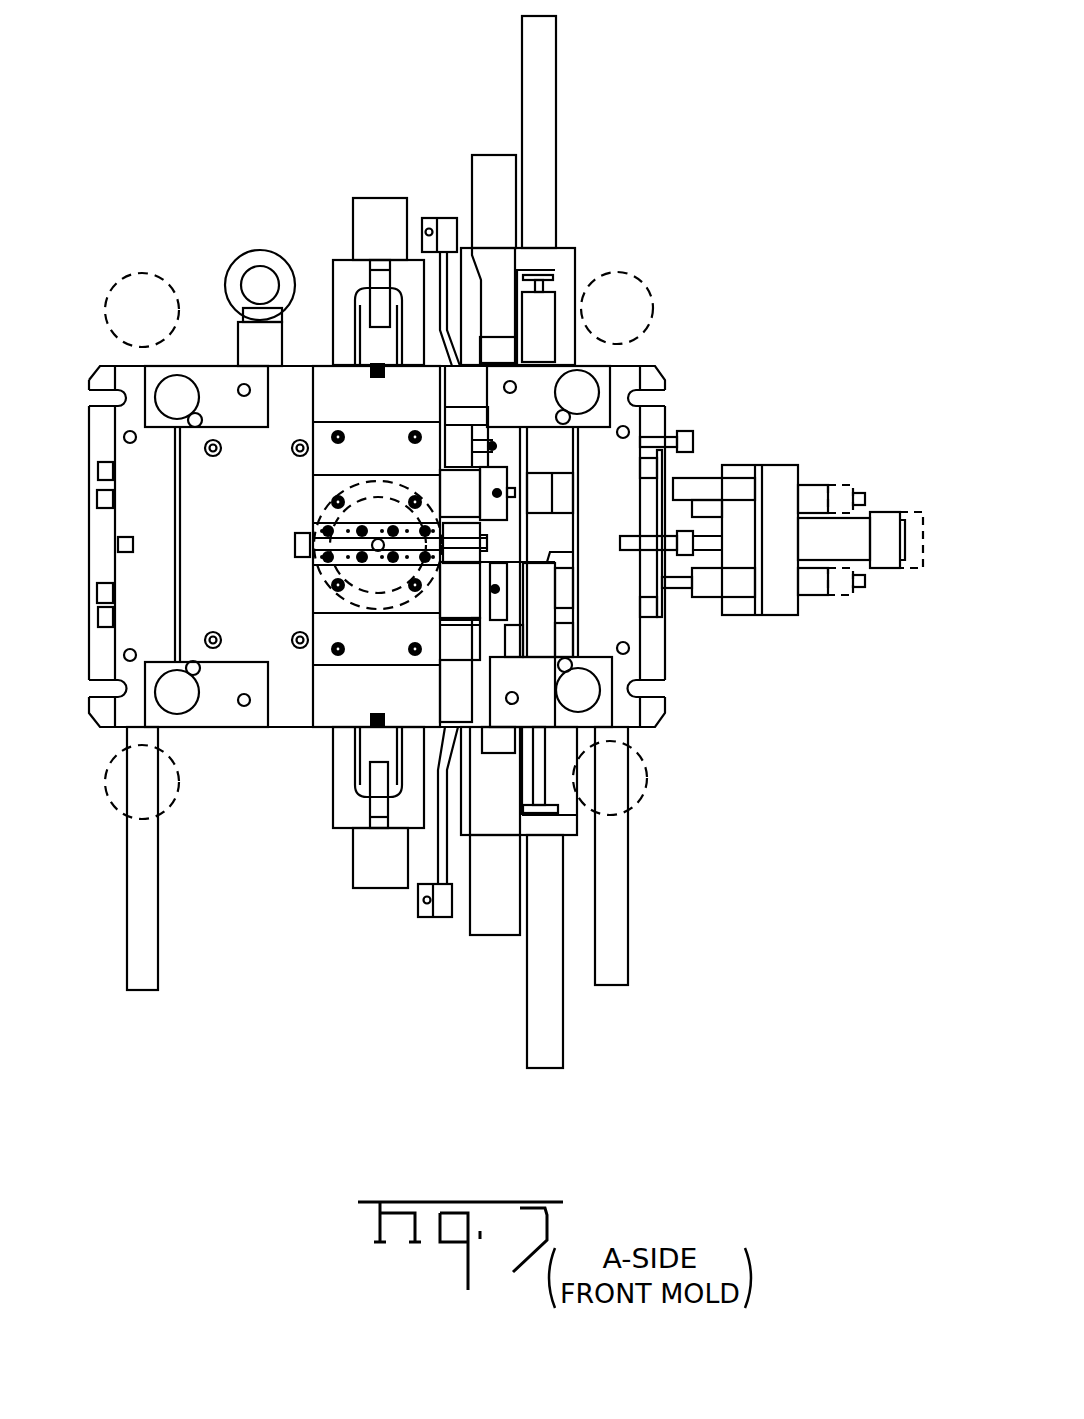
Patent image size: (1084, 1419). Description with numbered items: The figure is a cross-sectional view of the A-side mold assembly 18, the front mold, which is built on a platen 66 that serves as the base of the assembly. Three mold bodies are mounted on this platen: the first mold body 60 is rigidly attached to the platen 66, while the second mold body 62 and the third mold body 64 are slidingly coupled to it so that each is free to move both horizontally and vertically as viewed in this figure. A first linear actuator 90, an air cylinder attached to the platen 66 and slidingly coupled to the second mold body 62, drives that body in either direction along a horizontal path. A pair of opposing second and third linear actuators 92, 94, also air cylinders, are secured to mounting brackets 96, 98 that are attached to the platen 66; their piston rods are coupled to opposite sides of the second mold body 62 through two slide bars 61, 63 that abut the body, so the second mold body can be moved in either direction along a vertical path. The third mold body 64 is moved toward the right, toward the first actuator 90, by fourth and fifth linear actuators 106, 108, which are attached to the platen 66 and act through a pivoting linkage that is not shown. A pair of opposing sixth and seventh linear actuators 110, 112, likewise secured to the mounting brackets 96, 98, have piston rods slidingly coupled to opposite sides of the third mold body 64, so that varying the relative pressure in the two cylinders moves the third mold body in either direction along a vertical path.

The A-side mold assembly 18 is at (798, 268).
The first mold body 60 is at (312, 594).
The slide bar 61 is at (542, 598).
The second mold body 62 is at (517, 442).
The slide bar 63 is at (580, 317).
The third mold body 64 is at (468, 547).
The platen 66 is at (97, 653).
The first linear actuator 90 is at (857, 542).
The second linear actuator 92 is at (542, 1005).
The third linear actuator 94 is at (557, 53).
The mounting bracket 96 is at (557, 828).
The mounting bracket 98 is at (567, 265).
The fourth linear actuator 106 is at (385, 877).
The fifth linear actuator 108 is at (375, 207).
The sixth linear actuator 110 is at (487, 915).
The seventh linear actuator 112 is at (493, 160).